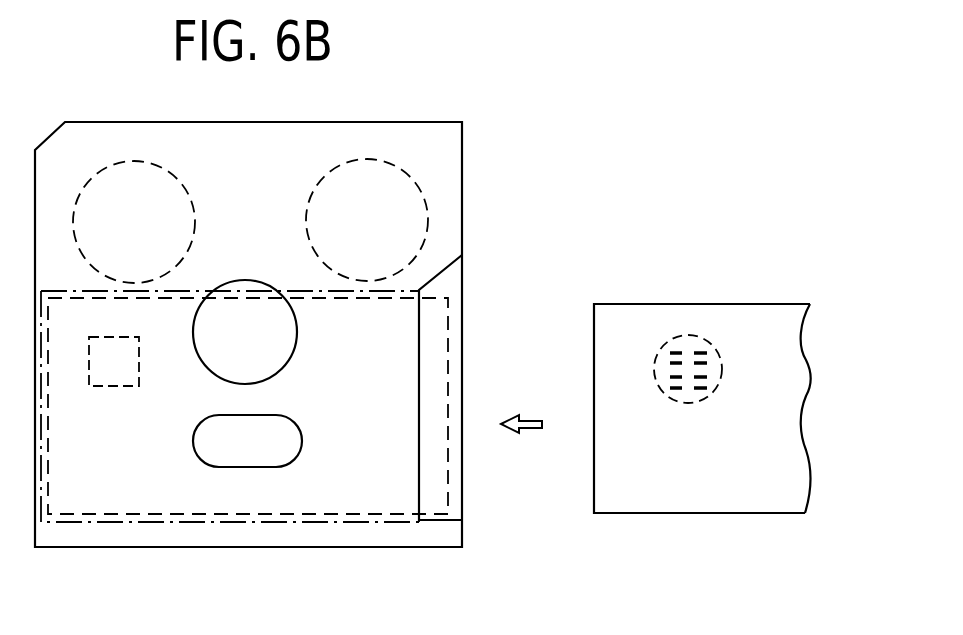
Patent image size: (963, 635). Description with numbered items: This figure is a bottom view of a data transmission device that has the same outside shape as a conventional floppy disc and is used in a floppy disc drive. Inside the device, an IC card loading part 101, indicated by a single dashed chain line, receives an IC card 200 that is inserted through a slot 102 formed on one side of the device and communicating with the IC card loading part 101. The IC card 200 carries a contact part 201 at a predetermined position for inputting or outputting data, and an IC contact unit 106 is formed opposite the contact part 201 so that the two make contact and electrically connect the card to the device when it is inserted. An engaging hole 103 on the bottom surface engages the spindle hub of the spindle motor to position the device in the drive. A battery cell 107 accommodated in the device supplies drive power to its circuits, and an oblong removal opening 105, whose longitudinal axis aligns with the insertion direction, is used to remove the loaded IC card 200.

The IC card loading part 101 is at (140, 523).
The slot 102 is at (438, 478).
The engaging hole 103 is at (290, 357).
The removal opening 105 is at (262, 467).
The IC contact unit 106 is at (102, 388).
The battery cell 107 is at (307, 219).
The IC card 200 is at (704, 298).
The contact part 201 is at (683, 405).